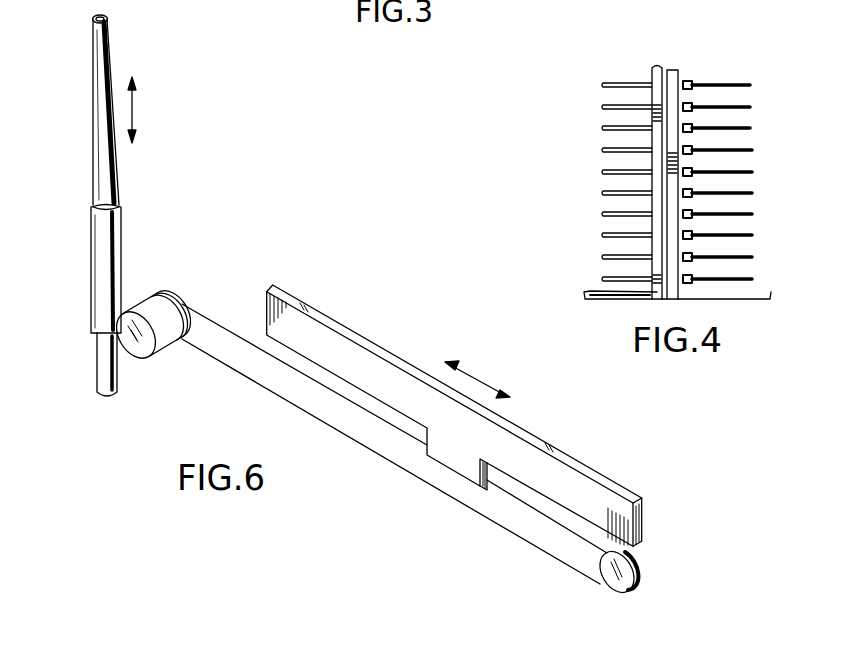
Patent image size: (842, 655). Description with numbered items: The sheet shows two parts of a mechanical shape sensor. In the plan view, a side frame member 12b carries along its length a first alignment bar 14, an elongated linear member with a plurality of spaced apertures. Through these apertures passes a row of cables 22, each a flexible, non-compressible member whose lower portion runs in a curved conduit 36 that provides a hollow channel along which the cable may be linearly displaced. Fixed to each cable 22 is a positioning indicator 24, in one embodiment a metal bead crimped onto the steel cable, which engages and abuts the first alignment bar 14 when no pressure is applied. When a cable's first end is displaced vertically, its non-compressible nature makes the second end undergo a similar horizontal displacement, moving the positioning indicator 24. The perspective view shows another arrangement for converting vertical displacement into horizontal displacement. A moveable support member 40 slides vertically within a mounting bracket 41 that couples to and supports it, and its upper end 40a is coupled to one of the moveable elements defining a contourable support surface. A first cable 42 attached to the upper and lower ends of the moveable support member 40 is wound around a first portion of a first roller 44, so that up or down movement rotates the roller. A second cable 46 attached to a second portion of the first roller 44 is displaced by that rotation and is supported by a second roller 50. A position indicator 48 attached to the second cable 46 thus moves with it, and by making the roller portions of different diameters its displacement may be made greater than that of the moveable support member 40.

In FIG. 4, the side frame member 12b is at (657, 62).
In FIG. 4, the first alignment bar 14 is at (675, 63).
In FIG. 4, the cable 22 is at (735, 83).
In FIG. 4, the positioning indicator 24 is at (690, 80).
In FIG. 4, the curved conduit 36 is at (610, 82).
In FIG. 6, the moveable support member 40 is at (93, 168).
In FIG. 6, the upper end 40a is at (95, 15).
In FIG. 6, the mounting bracket 41 is at (92, 258).
In FIG. 6, the first cable 42 is at (122, 276).
In FIG. 6, the first roller 44 is at (147, 290).
In FIG. 6, the second cable 46 is at (218, 322).
In FIG. 6, the position indicator 48 is at (352, 329).
In FIG. 6, the second roller 50 is at (600, 580).